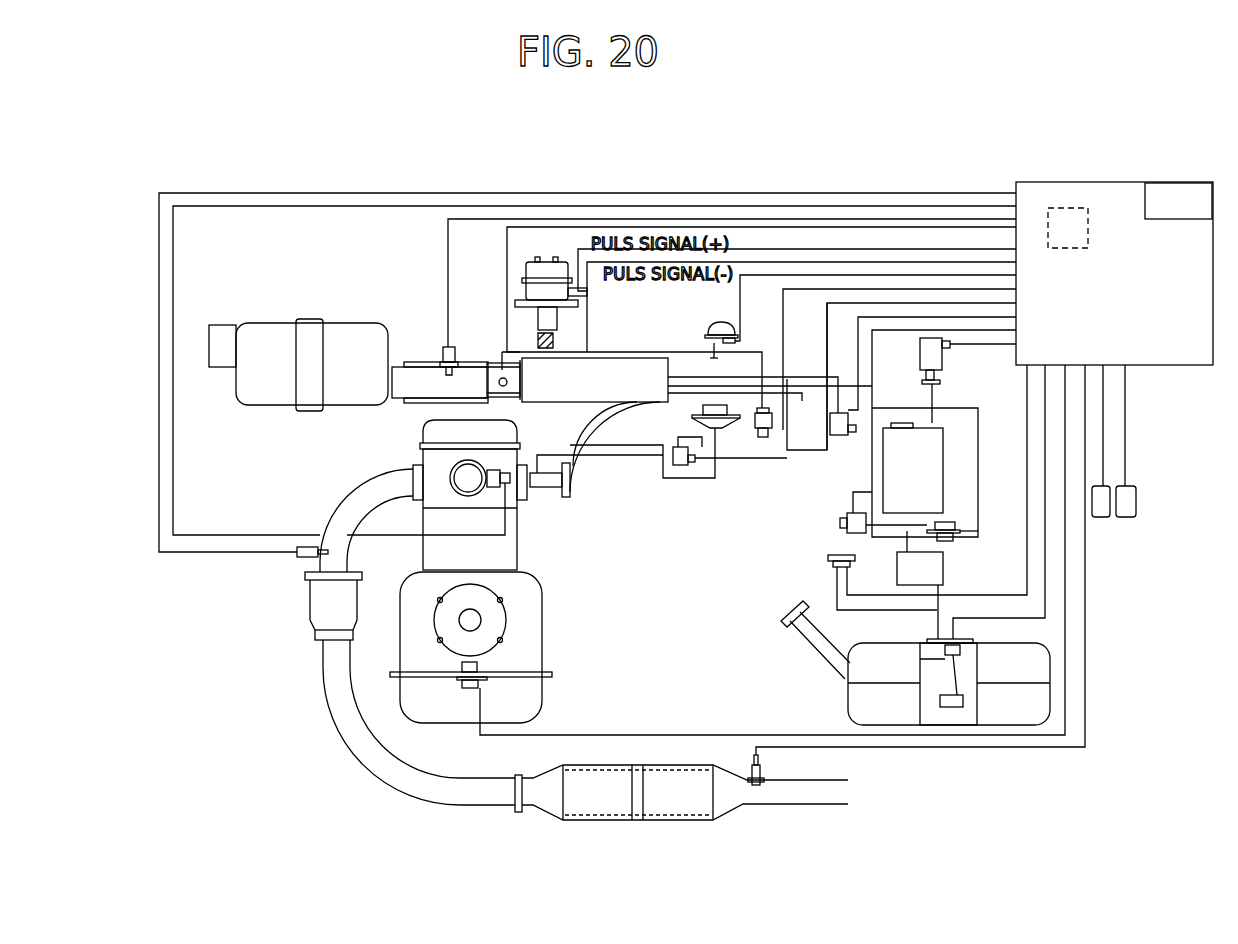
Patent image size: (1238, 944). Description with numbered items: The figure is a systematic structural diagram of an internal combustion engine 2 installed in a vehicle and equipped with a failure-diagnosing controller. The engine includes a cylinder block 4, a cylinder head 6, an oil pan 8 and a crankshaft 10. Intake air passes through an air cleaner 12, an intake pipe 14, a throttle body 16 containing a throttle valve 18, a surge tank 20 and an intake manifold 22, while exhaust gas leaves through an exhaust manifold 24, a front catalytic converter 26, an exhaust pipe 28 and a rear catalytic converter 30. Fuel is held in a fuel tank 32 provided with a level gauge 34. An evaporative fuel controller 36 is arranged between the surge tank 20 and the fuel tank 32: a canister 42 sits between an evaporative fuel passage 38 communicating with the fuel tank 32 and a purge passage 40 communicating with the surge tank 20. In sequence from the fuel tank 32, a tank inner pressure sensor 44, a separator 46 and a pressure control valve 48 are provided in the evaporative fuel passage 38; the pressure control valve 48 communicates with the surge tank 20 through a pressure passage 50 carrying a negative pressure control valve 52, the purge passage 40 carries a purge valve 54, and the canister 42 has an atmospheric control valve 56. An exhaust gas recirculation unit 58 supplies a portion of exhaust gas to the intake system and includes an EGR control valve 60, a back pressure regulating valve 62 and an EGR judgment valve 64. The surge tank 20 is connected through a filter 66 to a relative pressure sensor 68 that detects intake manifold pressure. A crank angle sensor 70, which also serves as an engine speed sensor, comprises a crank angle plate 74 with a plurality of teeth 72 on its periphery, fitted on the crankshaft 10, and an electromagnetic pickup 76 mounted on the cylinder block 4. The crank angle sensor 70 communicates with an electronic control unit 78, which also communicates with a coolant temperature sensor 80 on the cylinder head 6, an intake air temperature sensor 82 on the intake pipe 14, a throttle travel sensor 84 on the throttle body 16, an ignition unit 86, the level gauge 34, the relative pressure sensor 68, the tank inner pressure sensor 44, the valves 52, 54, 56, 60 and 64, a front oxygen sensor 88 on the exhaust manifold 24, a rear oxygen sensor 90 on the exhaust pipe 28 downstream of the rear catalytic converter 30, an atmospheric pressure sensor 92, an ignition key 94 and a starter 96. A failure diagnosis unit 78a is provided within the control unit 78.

The internal combustion engine 2 is at (557, 602).
The cylinder block 4 is at (542, 636).
The cylinder head 6 is at (423, 456).
The oil pan 8 is at (542, 700).
The crankshaft 10 is at (480, 613).
The air cleaner 12 is at (272, 345).
The intake pipe 14 is at (415, 365).
The throttle body 16 is at (497, 365).
The throttle valve 18 is at (500, 380).
The surge tank 20 is at (563, 400).
The intake manifold 22 is at (605, 482).
The exhaust manifold 24 is at (338, 490).
The front catalytic converter 26 is at (310, 598).
The exhaust pipe 28 is at (333, 718).
The rear catalytic converter 30 is at (600, 821).
The fuel tank 32 is at (848, 697).
The level gauge 34 is at (925, 655).
The evaporative fuel controller 36 is at (803, 552).
The evaporative fuel passage 38 is at (980, 453).
The purge passage 40 is at (817, 380).
The canister 42 is at (898, 481).
The tank inner pressure sensor 44 is at (832, 558).
The separator 46 is at (945, 576).
The pressure control valve 48 is at (960, 540).
The pressure passage 50 is at (813, 499).
The negative pressure control valve 52 is at (846, 531).
The purge valve 54 is at (868, 473).
The atmospheric control valve 56 is at (948, 362).
The exhaust gas recirculation unit 58 is at (710, 488).
The EGR control valve 60 is at (760, 438).
The back pressure regulating valve 62 is at (724, 430).
The EGR judgment valve 64 is at (690, 470).
The filter 66 is at (712, 358).
The relative pressure sensor 68 is at (714, 322).
The crank angle sensor 70 is at (452, 682).
The teeth 72 is at (438, 598).
The crank angle plate 74 is at (455, 643).
The electromagnetic pickup 76 is at (467, 688).
The electronic control unit 78 is at (1140, 365).
The failure diagnosis unit 78a is at (1052, 208).
The coolant temperature sensor 80 is at (505, 487).
The intake air temperature sensor 82 is at (443, 350).
The throttle travel sensor 84 is at (555, 342).
The ignition unit 86 is at (590, 293).
The front oxygen sensor 88 is at (305, 558).
The rear oxygen sensor 90 is at (762, 767).
The atmospheric pressure sensor 92 is at (1168, 196).
The ignition key 94 is at (1105, 520).
The starter 96 is at (1135, 518).